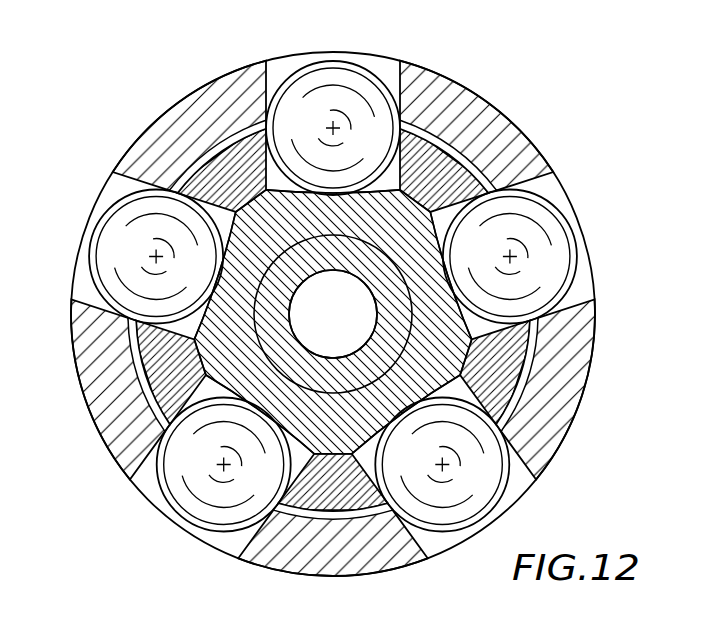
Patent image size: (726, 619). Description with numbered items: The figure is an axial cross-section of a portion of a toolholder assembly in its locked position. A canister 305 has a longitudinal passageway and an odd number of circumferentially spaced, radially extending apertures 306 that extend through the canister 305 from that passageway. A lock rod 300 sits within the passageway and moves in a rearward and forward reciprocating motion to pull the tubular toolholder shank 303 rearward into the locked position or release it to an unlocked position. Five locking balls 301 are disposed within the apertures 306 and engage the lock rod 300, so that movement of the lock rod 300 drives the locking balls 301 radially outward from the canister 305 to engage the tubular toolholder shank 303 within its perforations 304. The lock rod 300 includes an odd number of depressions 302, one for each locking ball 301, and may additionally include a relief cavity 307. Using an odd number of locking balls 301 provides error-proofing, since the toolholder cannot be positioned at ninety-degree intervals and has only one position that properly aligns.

The lock rod 300 is at (406, 208).
The locking balls 301 is at (343, 78).
The depressions 302 is at (331, 203).
The tubular toolholder shank 303 is at (120, 433).
The perforations 304 is at (583, 300).
The canister 305 is at (407, 137).
The apertures 306 is at (352, 510).
The relief cavity 307 is at (290, 266).